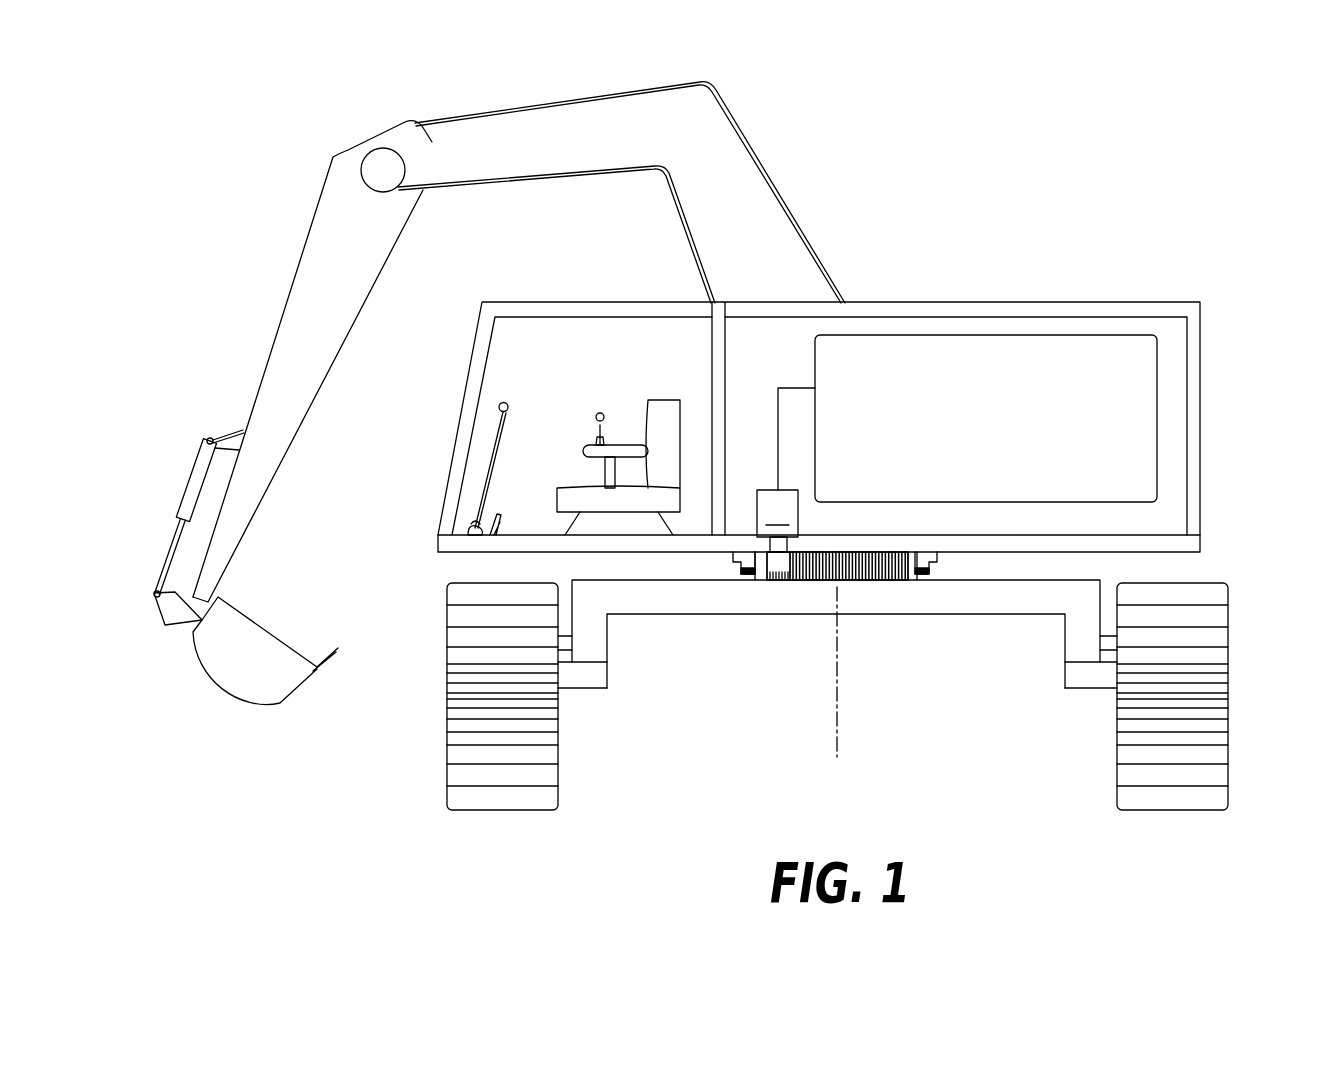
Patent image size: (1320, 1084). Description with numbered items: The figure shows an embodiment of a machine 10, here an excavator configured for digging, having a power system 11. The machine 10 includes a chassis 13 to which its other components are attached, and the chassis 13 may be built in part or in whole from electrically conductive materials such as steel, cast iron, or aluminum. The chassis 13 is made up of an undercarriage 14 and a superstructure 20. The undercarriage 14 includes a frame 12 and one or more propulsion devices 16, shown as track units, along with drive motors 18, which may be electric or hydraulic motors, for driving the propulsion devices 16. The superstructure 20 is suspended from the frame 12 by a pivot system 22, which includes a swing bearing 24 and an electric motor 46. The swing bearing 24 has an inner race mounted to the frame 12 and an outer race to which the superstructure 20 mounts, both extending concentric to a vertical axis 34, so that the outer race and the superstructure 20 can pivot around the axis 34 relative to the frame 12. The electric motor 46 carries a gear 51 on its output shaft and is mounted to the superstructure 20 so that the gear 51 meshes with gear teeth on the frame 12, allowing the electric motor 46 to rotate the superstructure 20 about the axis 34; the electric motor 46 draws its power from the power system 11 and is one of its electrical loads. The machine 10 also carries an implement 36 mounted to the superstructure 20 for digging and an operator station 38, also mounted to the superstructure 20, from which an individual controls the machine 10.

The machine 10 is at (1032, 155).
The power system 11 is at (762, 428).
The frame 12 is at (630, 614).
The chassis 13 is at (1236, 528).
The undercarriage 14 is at (378, 730).
The propulsion devices 16 is at (451, 768).
The drive motors 18 is at (580, 676).
The superstructure 20 is at (1200, 352).
The pivot system 22 is at (948, 572).
The swing bearing 24 is at (911, 576).
The vertical axis 34 is at (836, 728).
The implement 36 is at (497, 186).
The operator station 38 is at (598, 302).
The electric motor 46 is at (777, 513).
The gear 51 is at (781, 560).